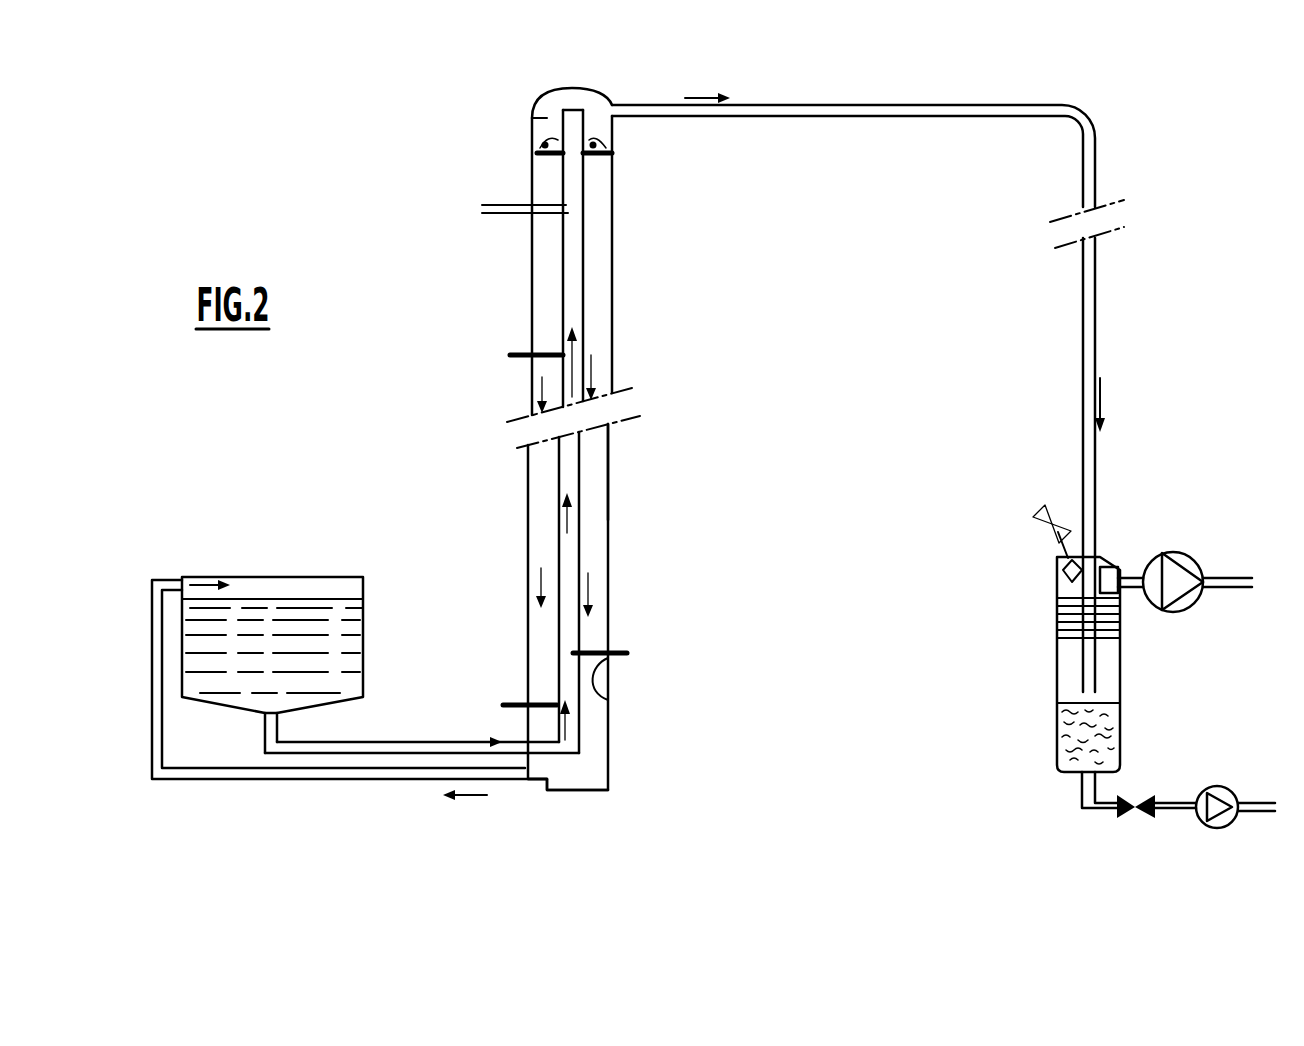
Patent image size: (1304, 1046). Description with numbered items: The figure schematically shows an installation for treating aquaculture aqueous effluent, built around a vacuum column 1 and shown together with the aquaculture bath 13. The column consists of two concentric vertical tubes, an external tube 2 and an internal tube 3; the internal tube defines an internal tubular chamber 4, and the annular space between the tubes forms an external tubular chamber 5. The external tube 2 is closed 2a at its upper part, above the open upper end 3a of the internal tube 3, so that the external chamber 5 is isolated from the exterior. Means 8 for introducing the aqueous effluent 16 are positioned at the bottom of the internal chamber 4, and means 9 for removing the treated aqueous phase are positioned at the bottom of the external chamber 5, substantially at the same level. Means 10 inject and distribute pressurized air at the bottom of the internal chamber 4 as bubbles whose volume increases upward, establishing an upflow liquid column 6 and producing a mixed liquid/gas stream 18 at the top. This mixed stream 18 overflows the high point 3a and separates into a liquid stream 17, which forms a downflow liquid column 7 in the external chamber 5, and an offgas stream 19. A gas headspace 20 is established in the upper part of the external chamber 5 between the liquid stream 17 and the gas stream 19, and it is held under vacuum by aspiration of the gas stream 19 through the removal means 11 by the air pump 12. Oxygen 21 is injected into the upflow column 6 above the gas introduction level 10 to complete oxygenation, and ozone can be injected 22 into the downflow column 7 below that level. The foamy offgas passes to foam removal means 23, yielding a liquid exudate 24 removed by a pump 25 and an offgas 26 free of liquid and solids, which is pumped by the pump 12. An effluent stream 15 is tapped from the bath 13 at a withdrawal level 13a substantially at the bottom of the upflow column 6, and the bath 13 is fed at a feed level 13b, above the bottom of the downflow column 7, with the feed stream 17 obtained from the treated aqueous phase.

The vacuum column 1 is at (672, 460).
The external tube 2 is at (612, 325).
The closed upper part of external tube 2a is at (553, 90).
The internal tube 3 is at (563, 268).
The open upper end of internal tube 3a is at (613, 128).
The internal tubular chamber 4 is at (572, 258).
The external tubular chamber 5 is at (608, 468).
The upflow liquid column 6 is at (572, 540).
The downflow liquid column 7 is at (532, 388).
The means for introducing the aqueous effluent 8 is at (548, 760).
The means for removing the treated aqueous phase 9 is at (500, 787).
The means for injecting and distributing the gas phase 10 is at (608, 706).
The means for removing the offgas stream 11 is at (630, 103).
The aspiration means 12 is at (1180, 612).
The aquaculture bath 13 is at (277, 618).
The level of withdrawal 13a is at (278, 722).
The feed level 13b is at (200, 575).
The effluent stream 15 is at (352, 665).
The aqueous effluent 16 is at (392, 743).
The liquid stream 17 is at (405, 780).
The mixed liquid/gas stream 18 is at (532, 118).
The offgas stream 19 is at (730, 110).
The gas headspace 20 is at (593, 103).
The oxygen injection 21 is at (482, 205).
The ozone injection 22 is at (518, 700).
The foam removal means 23 is at (1123, 673).
The liquid exudate 24 is at (1097, 812).
The pump 25 is at (1207, 785).
The offgas 26 is at (1133, 575).